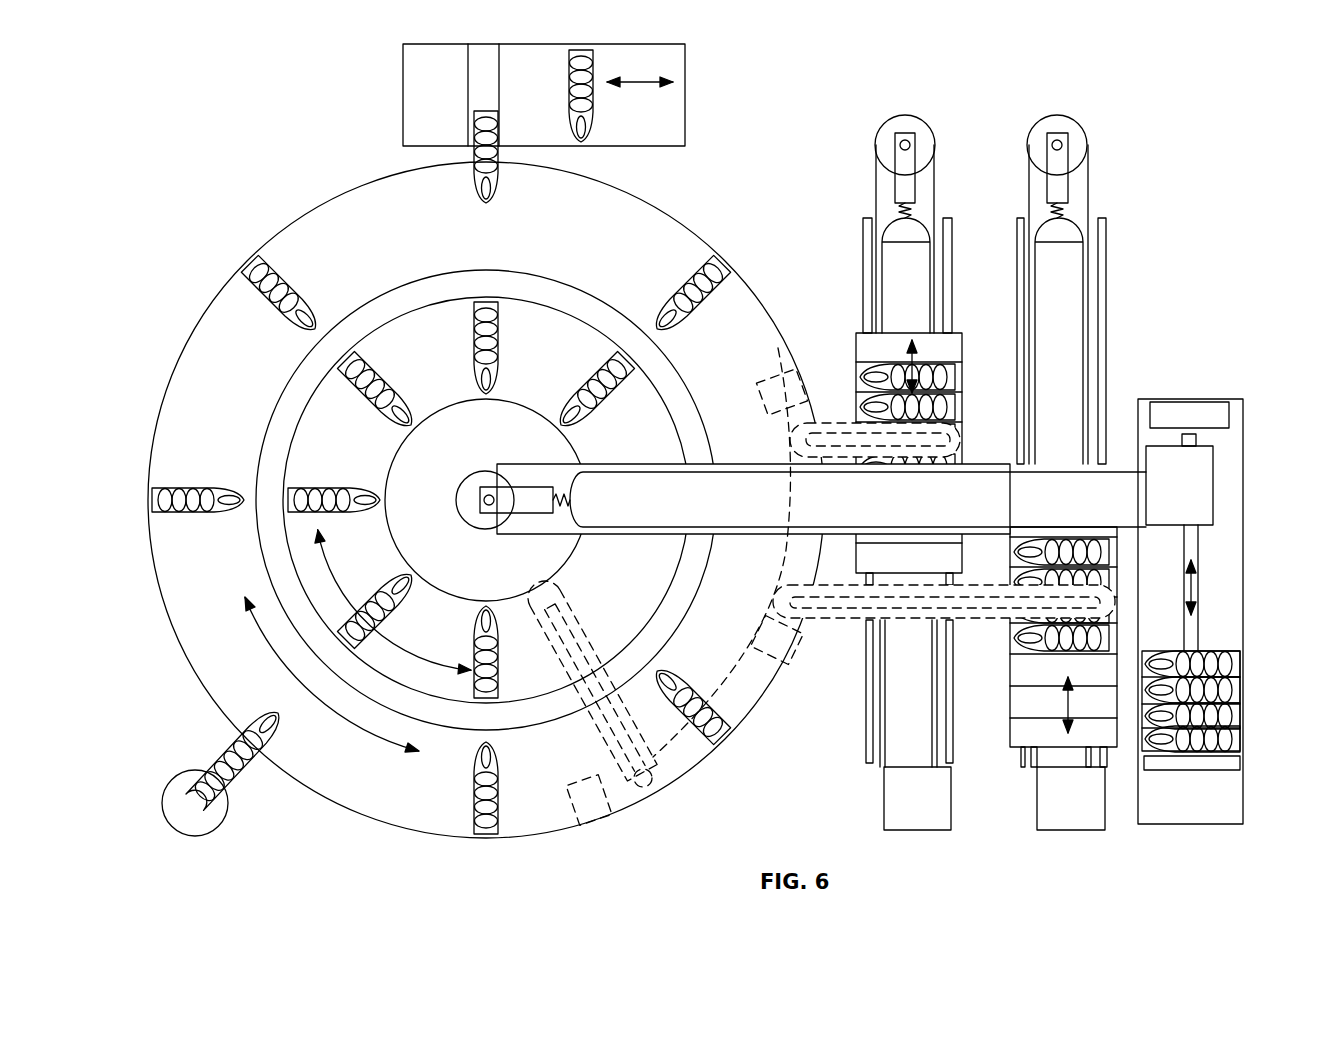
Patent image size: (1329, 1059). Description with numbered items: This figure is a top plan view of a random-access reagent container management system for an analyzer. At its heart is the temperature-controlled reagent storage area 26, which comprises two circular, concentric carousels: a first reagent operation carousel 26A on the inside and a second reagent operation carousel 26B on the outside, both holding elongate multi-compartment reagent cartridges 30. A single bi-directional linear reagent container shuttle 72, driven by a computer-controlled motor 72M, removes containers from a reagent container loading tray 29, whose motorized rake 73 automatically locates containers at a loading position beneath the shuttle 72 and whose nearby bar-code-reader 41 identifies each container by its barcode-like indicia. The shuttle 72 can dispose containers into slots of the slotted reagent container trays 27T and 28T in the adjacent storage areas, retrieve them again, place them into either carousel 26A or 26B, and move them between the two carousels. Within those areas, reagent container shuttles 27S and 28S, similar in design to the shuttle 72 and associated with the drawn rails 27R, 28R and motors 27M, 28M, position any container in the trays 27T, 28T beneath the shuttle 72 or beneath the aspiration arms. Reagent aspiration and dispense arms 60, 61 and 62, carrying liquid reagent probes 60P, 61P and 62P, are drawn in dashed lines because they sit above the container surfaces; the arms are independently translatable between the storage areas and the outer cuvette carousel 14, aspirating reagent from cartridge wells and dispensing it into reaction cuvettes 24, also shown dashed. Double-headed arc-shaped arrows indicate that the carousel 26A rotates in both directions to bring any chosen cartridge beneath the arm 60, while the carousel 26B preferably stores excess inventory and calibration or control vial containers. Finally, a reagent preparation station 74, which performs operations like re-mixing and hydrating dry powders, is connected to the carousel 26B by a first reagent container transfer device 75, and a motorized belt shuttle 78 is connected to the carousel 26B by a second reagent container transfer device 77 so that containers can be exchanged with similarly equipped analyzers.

The outer cuvette carousel 14 is at (745, 705).
The reaction cuvettes 24 is at (778, 398).
The reagent storage area 26 is at (305, 192).
The first reagent operation carousel 26A is at (486, 500).
The second reagent operation carousel 26B is at (480, 495).
The motor 27M is at (1072, 831).
The rail 27R is at (1105, 250).
The reagent container shuttle 27S is at (1108, 128).
The slotted reagent container tray 27T is at (1035, 733).
The motor 28M is at (918, 831).
The rail 28R is at (864, 266).
The reagent container shuttle 28S is at (868, 128).
The slotted reagent container tray 28T is at (878, 567).
The reagent container loading tray 29 is at (1202, 590).
The reagent cartridges 30 is at (250, 310).
The bar-code-reader 41 is at (1189, 416).
The reagent aspiration and dispense arm 60 is at (653, 762).
The liquid reagent probe 60P is at (650, 784).
The reagent aspiration and dispense arm 61 is at (817, 620).
The liquid reagent probe 61P is at (790, 600).
The reagent aspiration and dispense arm 62 is at (837, 418).
The liquid reagent probe 62P is at (795, 432).
The reagent container shuttle 72 is at (801, 499).
The motor 72M is at (1179, 485).
The motorized rake 73 is at (1155, 771).
The reagent preparation station 74 is at (186, 765).
The first reagent container transfer device 75 is at (250, 770).
The second reagent container transfer device 77 is at (468, 118).
The motorized belt shuttle 78 is at (686, 48).